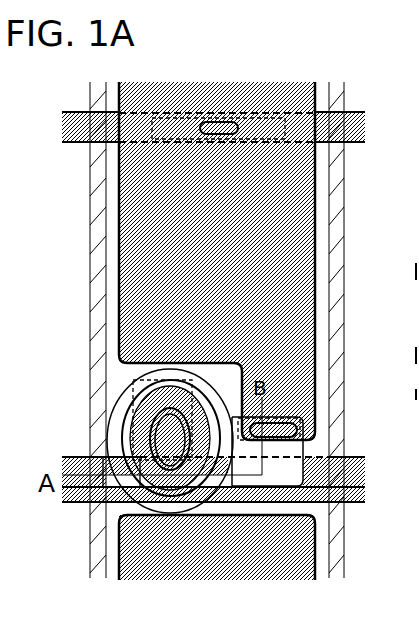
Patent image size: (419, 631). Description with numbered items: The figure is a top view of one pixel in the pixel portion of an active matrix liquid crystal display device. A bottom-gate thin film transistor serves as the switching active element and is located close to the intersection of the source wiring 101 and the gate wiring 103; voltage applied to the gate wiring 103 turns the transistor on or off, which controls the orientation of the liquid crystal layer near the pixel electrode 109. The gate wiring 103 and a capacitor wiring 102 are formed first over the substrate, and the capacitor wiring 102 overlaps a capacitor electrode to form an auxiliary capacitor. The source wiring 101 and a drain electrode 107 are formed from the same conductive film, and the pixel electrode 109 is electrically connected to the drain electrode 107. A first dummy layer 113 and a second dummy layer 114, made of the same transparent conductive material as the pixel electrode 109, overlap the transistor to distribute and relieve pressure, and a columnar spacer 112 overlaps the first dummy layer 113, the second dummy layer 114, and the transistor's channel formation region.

The source wiring 101 is at (94, 528).
The capacitor wiring 102 is at (72, 142).
The gate wiring 103 is at (70, 502).
The drain electrode 107 is at (297, 456).
The pixel electrode 109 is at (135, 285).
The columnar spacer 112 is at (150, 440).
The first dummy layer 113 is at (130, 428).
The second dummy layer 114 is at (135, 405).